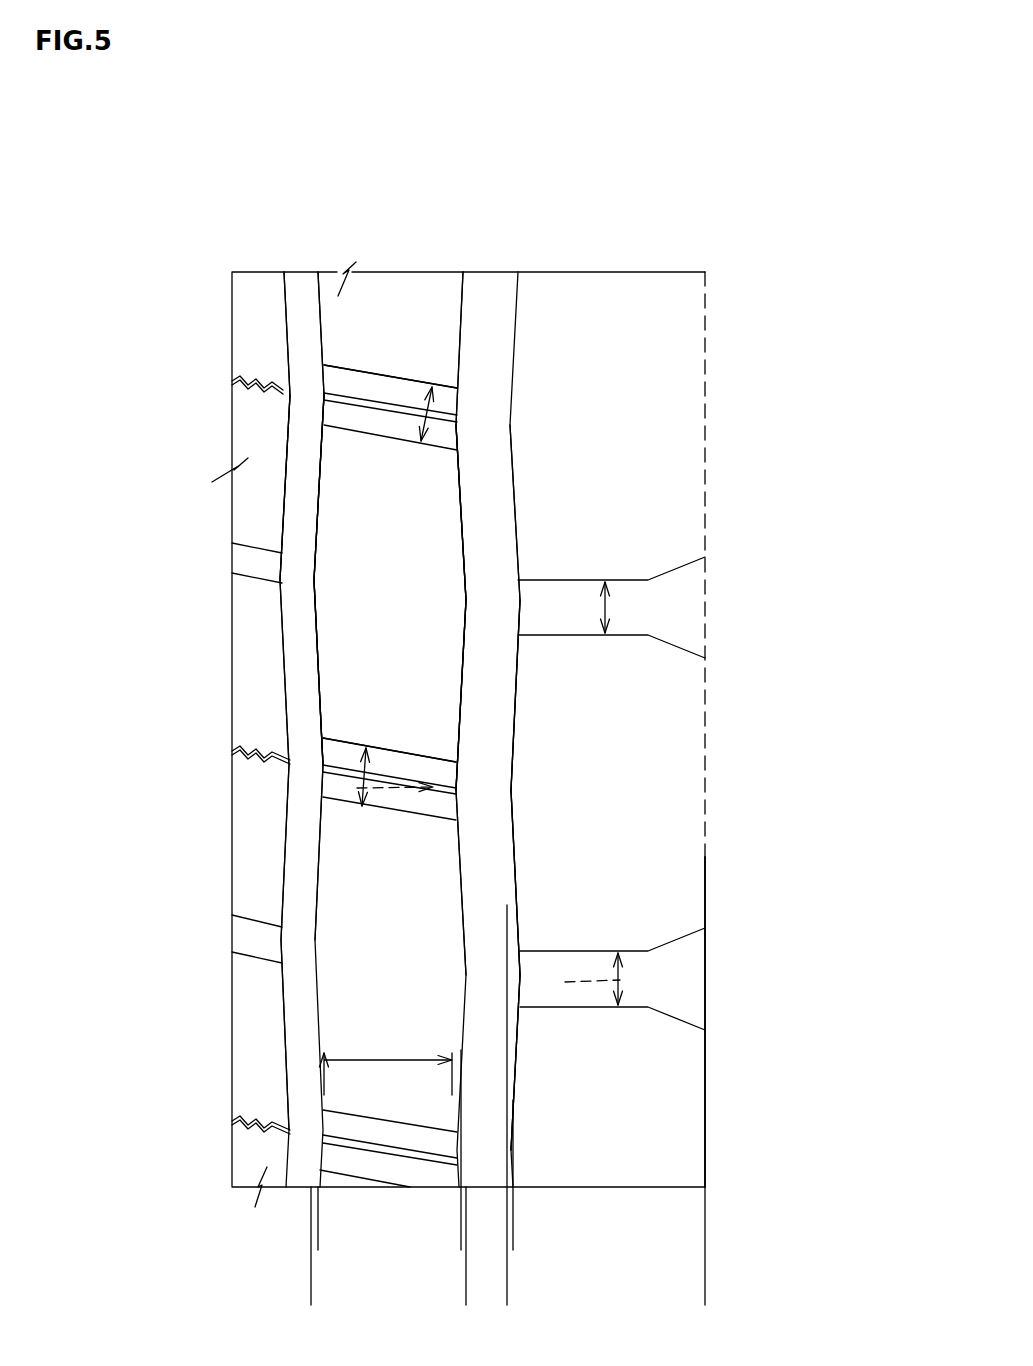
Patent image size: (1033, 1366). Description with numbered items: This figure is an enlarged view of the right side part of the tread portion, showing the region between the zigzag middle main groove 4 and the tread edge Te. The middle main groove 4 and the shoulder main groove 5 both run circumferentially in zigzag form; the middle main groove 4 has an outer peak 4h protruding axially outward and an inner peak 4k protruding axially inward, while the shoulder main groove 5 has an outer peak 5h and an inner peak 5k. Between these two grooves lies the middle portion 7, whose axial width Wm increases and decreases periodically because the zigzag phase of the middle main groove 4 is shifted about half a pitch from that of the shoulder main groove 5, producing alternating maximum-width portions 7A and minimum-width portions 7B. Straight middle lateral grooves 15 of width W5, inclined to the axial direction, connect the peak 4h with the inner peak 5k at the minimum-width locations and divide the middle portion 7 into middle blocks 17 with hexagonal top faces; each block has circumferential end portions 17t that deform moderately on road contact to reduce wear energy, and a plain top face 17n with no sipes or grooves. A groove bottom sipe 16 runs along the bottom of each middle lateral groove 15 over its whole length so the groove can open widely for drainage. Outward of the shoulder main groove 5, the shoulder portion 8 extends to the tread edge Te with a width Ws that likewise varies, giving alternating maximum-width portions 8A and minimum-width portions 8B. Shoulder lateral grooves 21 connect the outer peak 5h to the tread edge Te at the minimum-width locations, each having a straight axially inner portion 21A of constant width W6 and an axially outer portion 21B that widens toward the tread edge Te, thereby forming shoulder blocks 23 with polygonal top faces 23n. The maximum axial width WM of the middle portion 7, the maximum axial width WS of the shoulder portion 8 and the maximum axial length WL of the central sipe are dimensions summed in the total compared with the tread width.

The middle main groove 4 is at (299, 292).
The shoulder main groove 5 is at (488, 290).
The middle portion 7 is at (378, 292).
The shoulder portion 8 is at (615, 292).
The middle lateral groove 15 is at (397, 400).
The groove bottom sipe 16 is at (357, 390).
The middle block 17 is at (367, 518).
The top face 17n is at (367, 518).
The circumferential end portion 17t is at (345, 718).
The outer peak 4h is at (302, 382).
The inner peak 4k is at (290, 565).
The maximum-width portion 7A is at (307, 577).
The minimum-width portion 7B is at (303, 402).
The inner peak 5k is at (487, 425).
The outer peak 5h is at (468, 599).
The maximum-width portion 8A is at (502, 805).
The minimum-width portion 8B is at (502, 610).
The shoulder lateral groove 21 is at (696, 614).
The axially inner portion 21A is at (565, 617).
The axially outer portion 21B is at (687, 613).
The shoulder block 23 is at (660, 807).
The top face 23n is at (660, 807).
The tread edge Te is at (705, 322).
The width of middle lateral groove W5 is at (452, 417).
The constant width of inner portion W6 is at (605, 607).
The maximum axial length of central sipe WL is at (387, 1060).
The axial width of middle portion Wm is at (461, 1242).
The maximum axial width of middle portion WM is at (466, 1297).
The width of shoulder portion Ws is at (705, 1243).
The maximum axial width of shoulder portion WS is at (507, 1297).